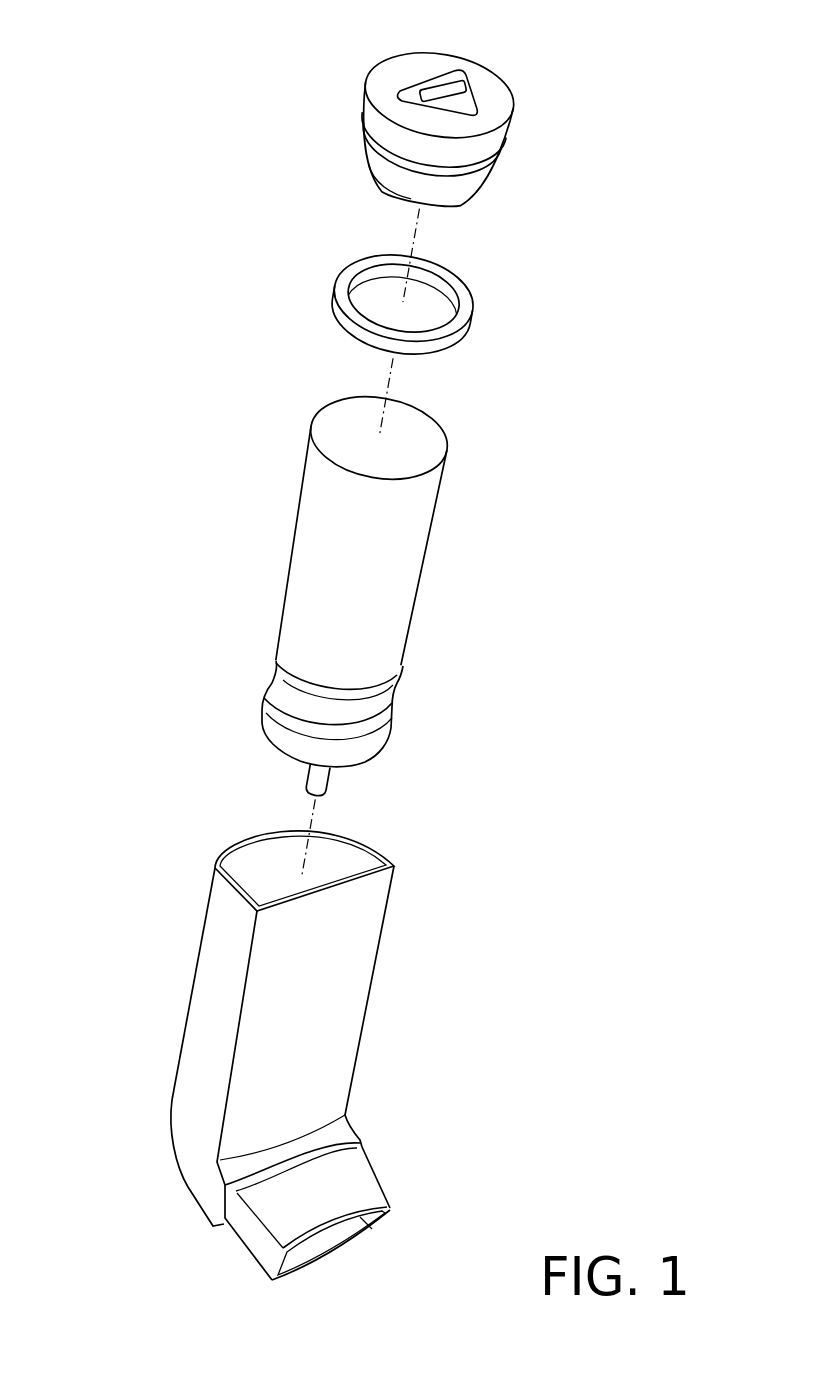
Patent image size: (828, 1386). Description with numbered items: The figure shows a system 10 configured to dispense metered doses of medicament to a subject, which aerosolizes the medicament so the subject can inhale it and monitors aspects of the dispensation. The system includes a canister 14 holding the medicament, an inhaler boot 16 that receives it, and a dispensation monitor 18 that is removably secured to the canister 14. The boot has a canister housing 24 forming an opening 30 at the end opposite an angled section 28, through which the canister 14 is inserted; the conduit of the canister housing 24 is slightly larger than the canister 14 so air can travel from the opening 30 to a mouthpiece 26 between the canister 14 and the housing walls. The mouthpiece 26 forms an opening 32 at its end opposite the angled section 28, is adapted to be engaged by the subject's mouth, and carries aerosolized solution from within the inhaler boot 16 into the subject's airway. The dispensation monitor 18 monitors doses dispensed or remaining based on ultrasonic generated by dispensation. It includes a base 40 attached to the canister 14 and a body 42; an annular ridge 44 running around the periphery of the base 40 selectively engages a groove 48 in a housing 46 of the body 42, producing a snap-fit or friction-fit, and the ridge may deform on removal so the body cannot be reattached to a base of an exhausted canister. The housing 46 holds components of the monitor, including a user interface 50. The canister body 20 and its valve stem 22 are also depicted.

The system 10 is at (136, 265).
The canister 14 is at (335, 594).
The inhaler boot 16 is at (271, 1047).
The dispensation monitor 18 is at (406, 114).
The canister 20 is at (418, 538).
The valve stem 22 is at (306, 778).
The canister housing 24 is at (358, 984).
The mouthpiece 26 is at (360, 1178).
The angled section 28 is at (180, 1152).
The opening 30 is at (354, 858).
The opening 32 is at (345, 1238).
The base 40 is at (455, 340).
The body 42 is at (497, 90).
The annular ridge 44 is at (455, 282).
The housing 46 is at (502, 166).
The groove 48 is at (395, 195).
The user interface 50 is at (447, 80).